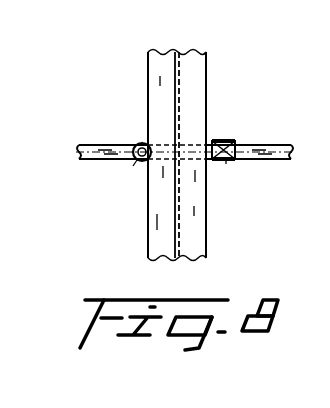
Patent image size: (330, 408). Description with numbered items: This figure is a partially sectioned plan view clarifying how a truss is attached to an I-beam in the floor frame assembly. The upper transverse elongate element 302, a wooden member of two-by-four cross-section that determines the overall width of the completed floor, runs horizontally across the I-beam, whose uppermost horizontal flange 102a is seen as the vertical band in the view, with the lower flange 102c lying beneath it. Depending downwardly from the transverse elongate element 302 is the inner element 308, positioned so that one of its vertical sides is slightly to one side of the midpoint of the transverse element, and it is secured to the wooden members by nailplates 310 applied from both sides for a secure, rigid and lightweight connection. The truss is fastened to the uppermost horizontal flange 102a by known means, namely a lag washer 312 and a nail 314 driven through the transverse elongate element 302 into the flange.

The uppermost horizontal flange 102a is at (158, 70).
The lower flange 102c is at (205, 82).
The upper transverse elongate element 302 is at (86, 146).
The inner element 308 is at (238, 153).
The nailplates 310 is at (226, 166).
The lag washer 312 is at (138, 164).
The nail 314 is at (136, 146).